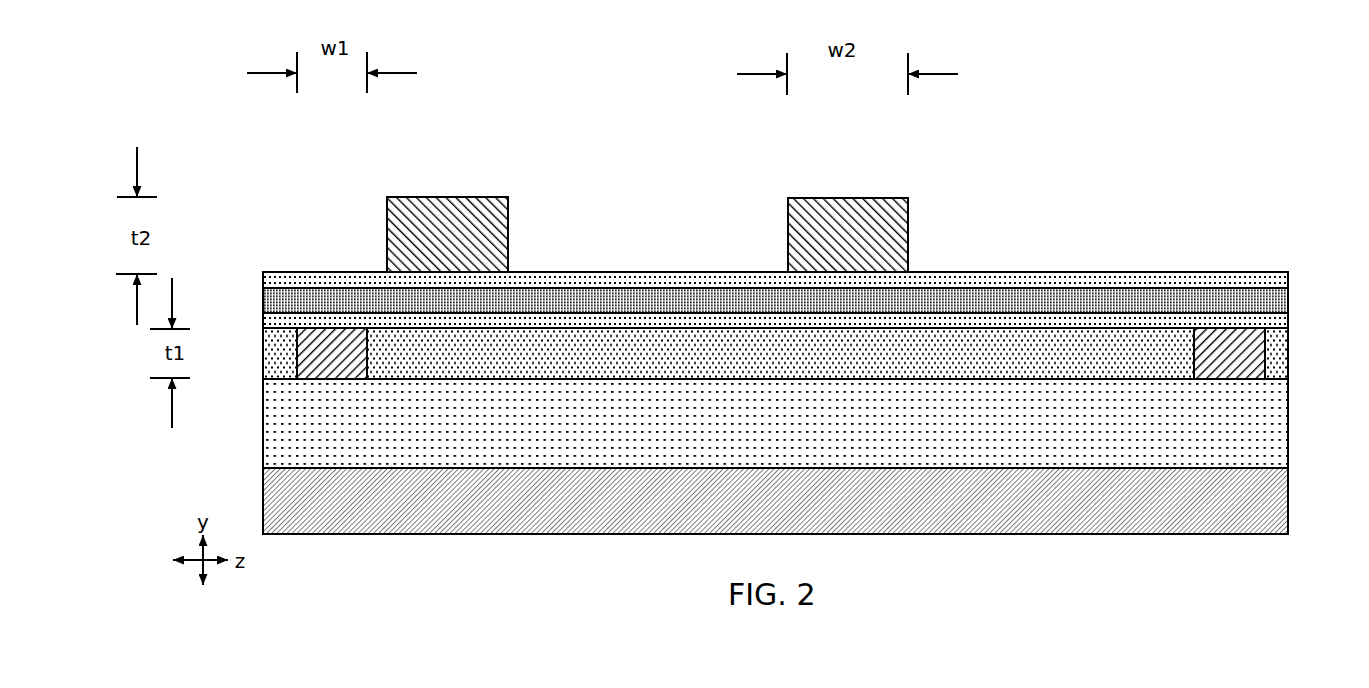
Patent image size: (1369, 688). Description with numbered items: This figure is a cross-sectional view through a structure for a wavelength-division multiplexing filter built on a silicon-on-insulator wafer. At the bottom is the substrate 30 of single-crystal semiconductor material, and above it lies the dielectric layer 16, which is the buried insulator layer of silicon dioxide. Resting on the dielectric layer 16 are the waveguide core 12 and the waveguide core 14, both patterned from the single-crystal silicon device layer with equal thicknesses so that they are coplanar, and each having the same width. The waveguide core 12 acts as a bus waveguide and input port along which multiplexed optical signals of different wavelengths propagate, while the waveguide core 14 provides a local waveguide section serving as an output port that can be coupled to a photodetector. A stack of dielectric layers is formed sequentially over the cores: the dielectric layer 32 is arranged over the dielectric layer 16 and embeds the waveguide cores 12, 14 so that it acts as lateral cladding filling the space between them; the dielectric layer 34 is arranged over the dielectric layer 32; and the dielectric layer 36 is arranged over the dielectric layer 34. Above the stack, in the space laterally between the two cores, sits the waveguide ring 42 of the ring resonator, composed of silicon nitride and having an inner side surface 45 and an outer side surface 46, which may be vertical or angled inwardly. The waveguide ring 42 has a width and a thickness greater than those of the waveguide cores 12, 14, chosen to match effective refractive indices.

The waveguide core 12 is at (332, 352).
The waveguide core 14 is at (1230, 356).
The dielectric layer 16 is at (1250, 441).
The substrate 30 is at (1250, 500).
The dielectric layer 32 is at (1125, 347).
The dielectric layer 34 is at (316, 326).
The dielectric layer 36 is at (313, 282).
The waveguide ring 42 is at (410, 248).
The inner side surface 45 is at (788, 237).
The outer side surface 46 is at (908, 237).